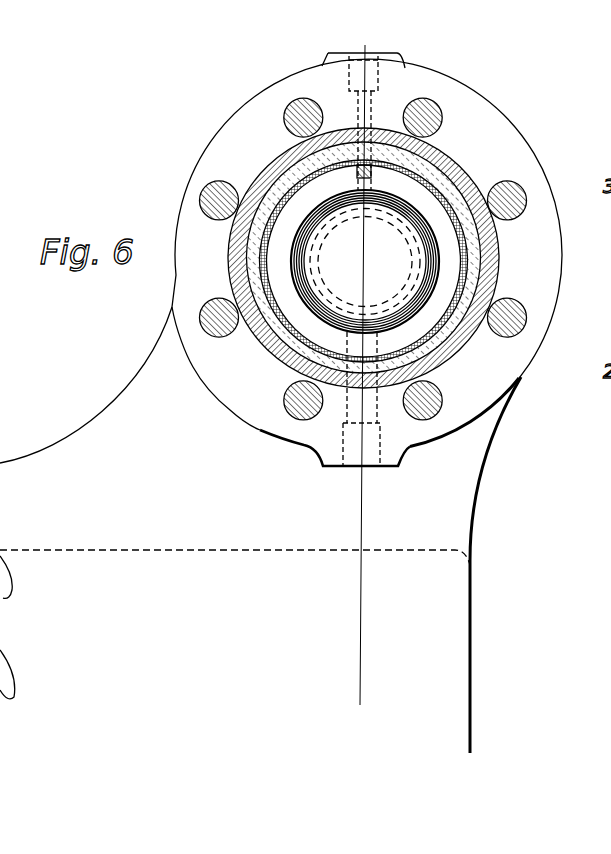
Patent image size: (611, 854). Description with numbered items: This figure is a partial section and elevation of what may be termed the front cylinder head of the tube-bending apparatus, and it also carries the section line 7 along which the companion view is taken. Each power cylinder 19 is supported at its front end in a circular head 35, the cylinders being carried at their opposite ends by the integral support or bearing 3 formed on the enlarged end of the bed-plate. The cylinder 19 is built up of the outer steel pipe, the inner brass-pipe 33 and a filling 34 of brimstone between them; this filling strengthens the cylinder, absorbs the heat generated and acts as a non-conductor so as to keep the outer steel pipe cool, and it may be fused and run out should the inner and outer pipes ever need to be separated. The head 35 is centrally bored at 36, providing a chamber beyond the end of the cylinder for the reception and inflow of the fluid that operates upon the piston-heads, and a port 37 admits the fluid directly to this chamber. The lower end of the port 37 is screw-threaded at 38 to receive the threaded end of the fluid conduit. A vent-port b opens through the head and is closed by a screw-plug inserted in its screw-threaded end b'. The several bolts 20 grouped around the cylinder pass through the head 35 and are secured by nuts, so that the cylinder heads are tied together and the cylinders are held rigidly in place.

The integral support or bearing 3 is at (22, 473).
The dove-tail groove 7 is at (364, 379).
The power cylinder 19 is at (499, 242).
The bolts 20 is at (510, 186).
The inner brass-pipe 33 is at (463, 350).
The filling 34 is at (262, 335).
The circular head 35 is at (232, 118).
The central bore 36 is at (365, 261).
The port 37 is at (348, 410).
The screw-threaded end 38 is at (347, 457).
The vent-port b is at (380, 138).
The screw-threaded end b' is at (397, 69).